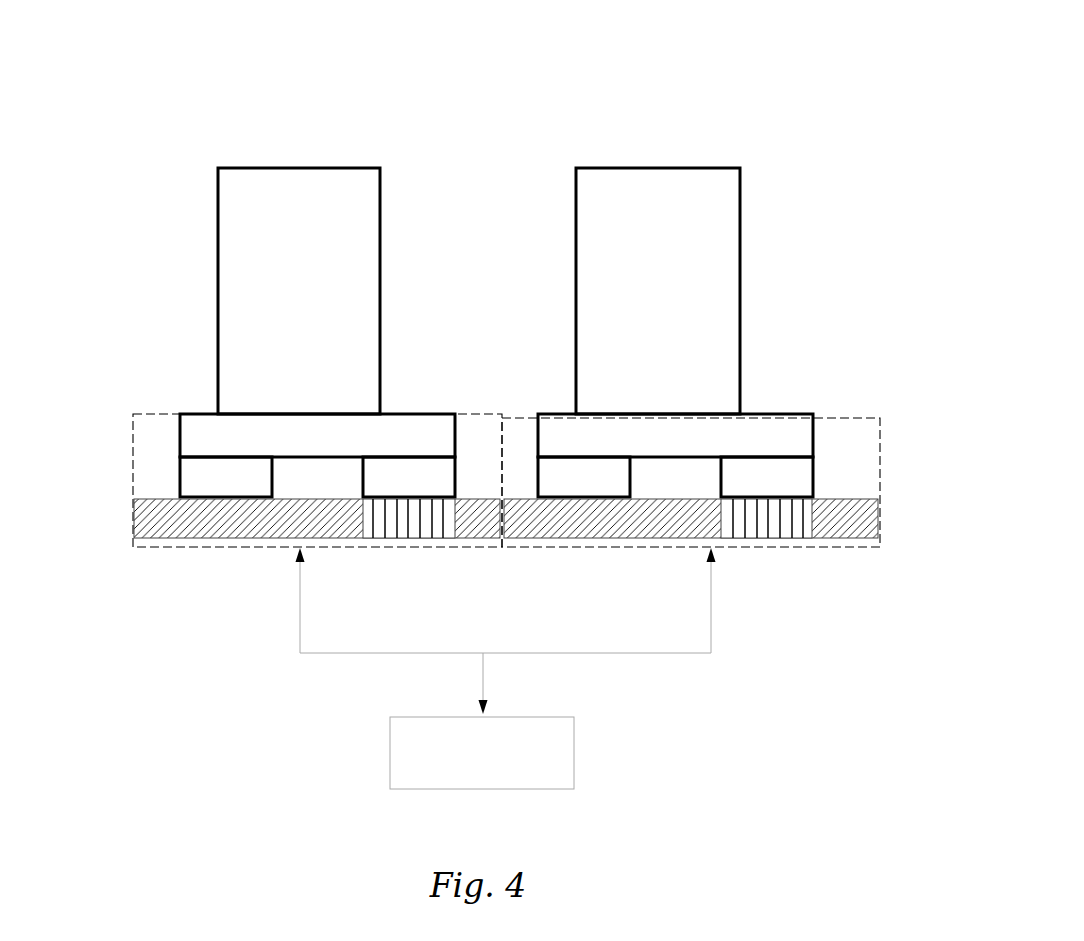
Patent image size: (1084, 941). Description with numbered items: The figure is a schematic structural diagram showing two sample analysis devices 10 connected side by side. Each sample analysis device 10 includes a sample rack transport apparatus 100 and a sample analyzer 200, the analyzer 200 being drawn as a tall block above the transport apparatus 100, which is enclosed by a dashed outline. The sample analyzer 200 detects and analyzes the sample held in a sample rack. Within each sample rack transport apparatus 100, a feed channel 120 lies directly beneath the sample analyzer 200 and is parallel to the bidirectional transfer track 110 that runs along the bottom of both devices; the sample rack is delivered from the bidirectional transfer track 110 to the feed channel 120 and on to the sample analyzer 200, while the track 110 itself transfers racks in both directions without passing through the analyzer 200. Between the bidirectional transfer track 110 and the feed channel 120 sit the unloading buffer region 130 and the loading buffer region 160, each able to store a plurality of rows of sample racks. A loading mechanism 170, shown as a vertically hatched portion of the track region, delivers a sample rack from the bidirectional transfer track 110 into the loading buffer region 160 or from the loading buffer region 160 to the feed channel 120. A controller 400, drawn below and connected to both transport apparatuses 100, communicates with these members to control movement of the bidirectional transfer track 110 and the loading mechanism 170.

The sample analysis device 10 is at (300, 124).
The sample rack transport apparatus 100 is at (174, 404).
The sample analyzer 200 is at (263, 223).
The feed channel 120 is at (280, 443).
The unloading buffer region 130 is at (217, 480).
The loading buffer region 160 is at (413, 477).
The bidirectional transfer track 110 is at (232, 526).
The loading mechanism 170 is at (400, 526).
The controller 400 is at (553, 740).